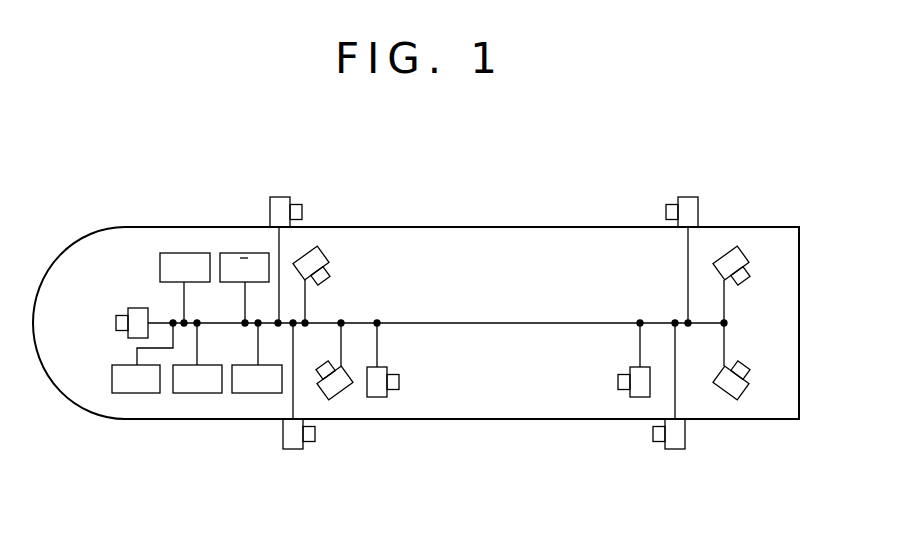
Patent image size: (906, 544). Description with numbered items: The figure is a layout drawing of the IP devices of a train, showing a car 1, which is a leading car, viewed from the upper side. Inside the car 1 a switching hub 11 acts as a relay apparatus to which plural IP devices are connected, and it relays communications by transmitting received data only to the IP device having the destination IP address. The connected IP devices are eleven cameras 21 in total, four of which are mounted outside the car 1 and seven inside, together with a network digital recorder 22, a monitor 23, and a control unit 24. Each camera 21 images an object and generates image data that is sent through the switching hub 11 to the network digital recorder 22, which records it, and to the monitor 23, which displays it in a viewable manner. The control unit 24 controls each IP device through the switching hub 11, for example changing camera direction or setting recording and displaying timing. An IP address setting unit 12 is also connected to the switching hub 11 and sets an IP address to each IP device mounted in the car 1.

The car 1 is at (490, 227).
The switching hub 11 is at (197, 393).
The IP address setting unit 12 is at (137, 393).
The camera 21 is at (746, 444).
The network digital recorder 22 is at (255, 393).
The monitor 23 is at (242, 253).
The control unit 24 is at (185, 253).